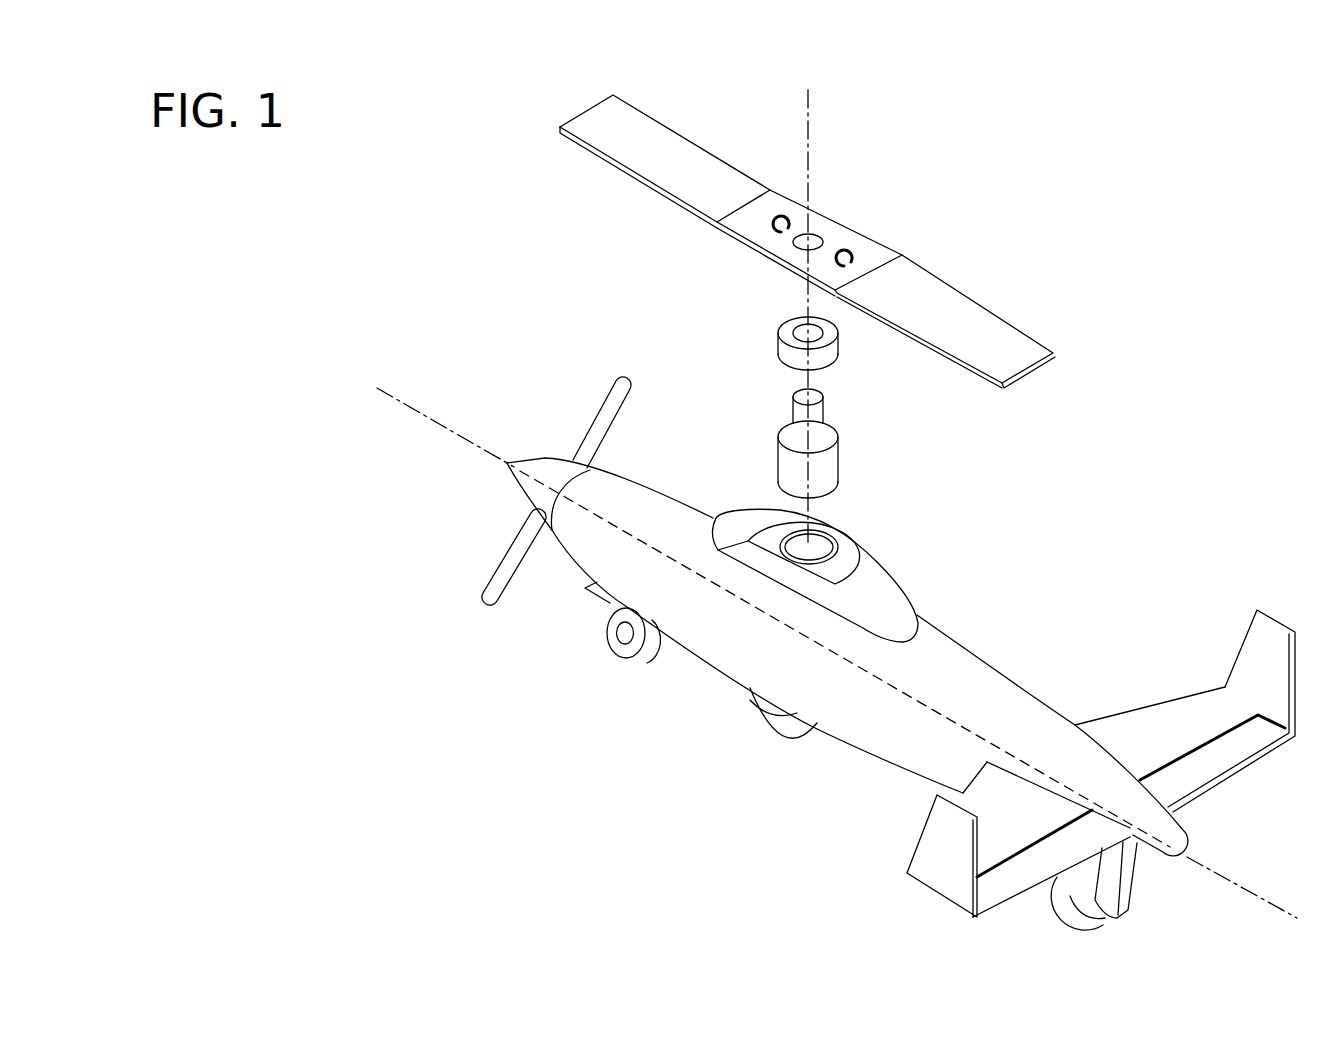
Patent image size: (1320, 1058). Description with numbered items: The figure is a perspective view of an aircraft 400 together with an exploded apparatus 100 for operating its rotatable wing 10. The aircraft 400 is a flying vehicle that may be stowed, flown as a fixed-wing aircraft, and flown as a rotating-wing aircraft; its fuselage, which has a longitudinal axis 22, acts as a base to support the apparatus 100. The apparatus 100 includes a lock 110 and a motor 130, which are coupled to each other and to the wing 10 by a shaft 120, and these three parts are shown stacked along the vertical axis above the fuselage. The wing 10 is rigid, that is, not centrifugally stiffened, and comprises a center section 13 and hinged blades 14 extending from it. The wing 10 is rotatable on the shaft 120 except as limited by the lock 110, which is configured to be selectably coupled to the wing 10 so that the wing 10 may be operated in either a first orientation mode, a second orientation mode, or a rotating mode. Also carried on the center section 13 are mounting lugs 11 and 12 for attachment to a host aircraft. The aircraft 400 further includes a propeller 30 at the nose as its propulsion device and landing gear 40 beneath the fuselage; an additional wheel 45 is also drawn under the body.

The wing 10 is at (998, 178).
The mounting lug 11 is at (785, 213).
The mounting lug 12 is at (848, 245).
The center section 13 is at (728, 247).
The hinged blades 14 is at (676, 128).
The longitudinal axis 22 is at (422, 415).
The propeller 30 is at (536, 387).
The landing gear 40 is at (610, 642).
The wheel 45 is at (768, 730).
The apparatus 100 is at (850, 335).
The lock 110 is at (778, 341).
The shaft 120 is at (793, 415).
The motor 130 is at (778, 467).
The aircraft 400 is at (1200, 482).